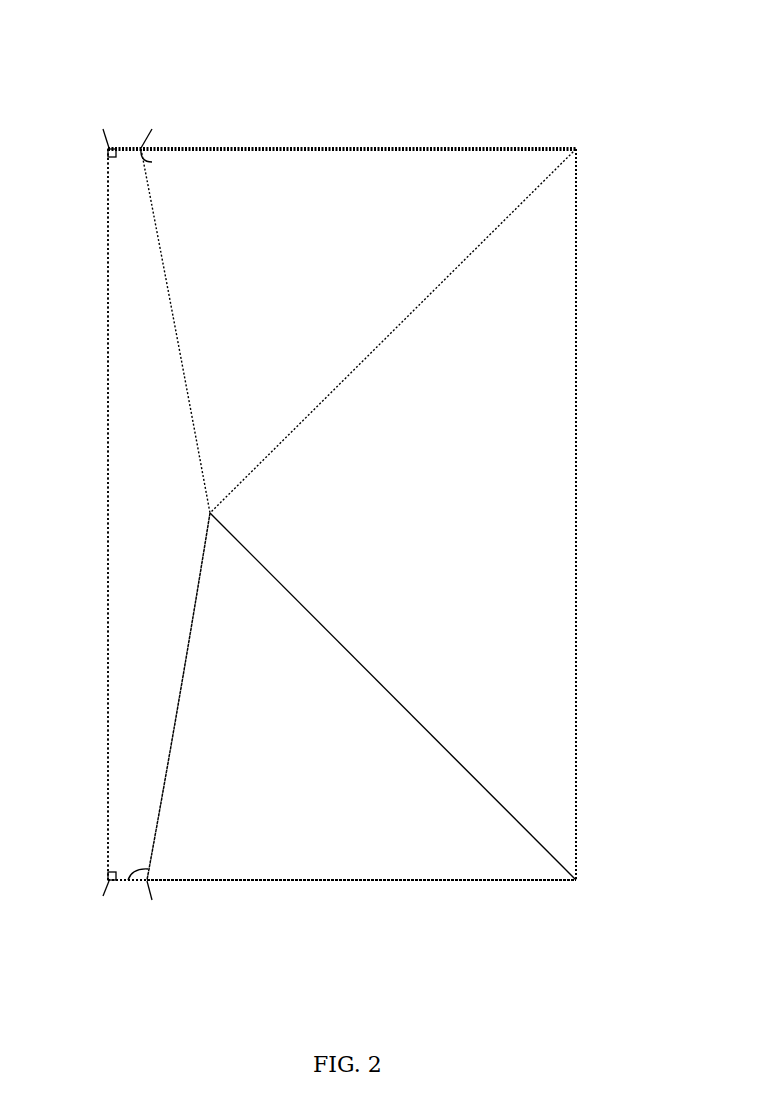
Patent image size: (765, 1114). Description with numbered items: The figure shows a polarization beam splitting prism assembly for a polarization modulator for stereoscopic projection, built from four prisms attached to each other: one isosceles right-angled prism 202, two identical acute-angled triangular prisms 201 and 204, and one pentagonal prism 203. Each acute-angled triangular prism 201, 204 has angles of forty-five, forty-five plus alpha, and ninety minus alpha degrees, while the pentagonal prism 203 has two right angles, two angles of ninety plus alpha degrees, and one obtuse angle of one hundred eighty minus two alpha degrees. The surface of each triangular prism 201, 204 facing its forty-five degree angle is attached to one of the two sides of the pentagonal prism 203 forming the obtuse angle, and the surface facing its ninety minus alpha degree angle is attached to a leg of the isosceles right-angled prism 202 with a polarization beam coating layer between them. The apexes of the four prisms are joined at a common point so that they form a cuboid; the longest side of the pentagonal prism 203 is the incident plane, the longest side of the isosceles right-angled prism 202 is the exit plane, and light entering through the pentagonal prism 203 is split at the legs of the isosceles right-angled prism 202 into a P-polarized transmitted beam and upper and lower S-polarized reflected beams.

The acute-angled triangular prism 201 is at (318, 149).
The isosceles right-angled prism 202 is at (466, 500).
The pentagonal prism 203 is at (124, 412).
The acute-angled triangular prism 204 is at (288, 820).